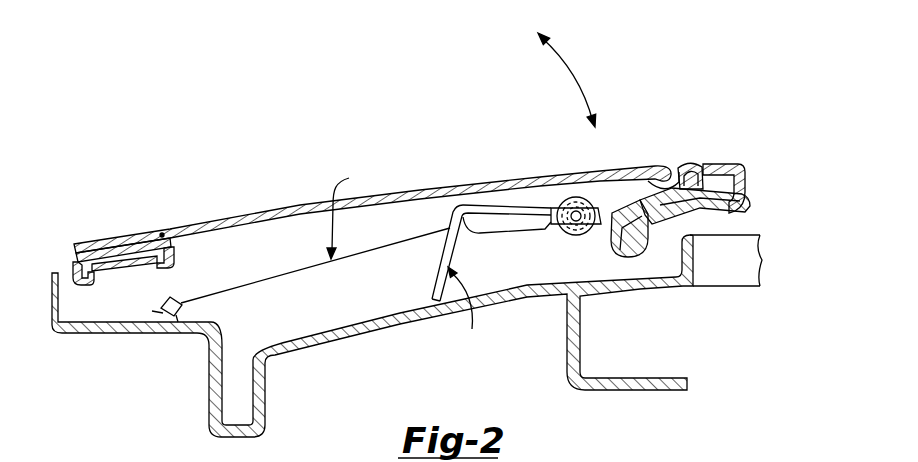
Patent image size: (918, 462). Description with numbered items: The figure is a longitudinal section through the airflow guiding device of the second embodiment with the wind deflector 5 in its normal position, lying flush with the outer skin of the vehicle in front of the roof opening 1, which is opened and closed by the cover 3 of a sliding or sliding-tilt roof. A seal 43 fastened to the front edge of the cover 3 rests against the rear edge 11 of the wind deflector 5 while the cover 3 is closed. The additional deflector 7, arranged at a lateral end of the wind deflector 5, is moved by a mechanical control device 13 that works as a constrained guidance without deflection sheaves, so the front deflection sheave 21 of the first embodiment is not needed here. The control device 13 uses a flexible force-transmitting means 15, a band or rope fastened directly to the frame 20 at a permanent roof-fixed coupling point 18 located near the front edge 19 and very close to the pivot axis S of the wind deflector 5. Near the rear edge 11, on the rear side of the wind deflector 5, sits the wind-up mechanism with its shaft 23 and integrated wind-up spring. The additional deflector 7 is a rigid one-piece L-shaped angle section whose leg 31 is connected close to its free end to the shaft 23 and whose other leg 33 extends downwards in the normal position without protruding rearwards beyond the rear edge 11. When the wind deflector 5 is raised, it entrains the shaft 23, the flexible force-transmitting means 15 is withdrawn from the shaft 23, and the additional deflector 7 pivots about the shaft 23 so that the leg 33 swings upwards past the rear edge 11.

The roof opening 1 is at (742, 237).
The cover 3 is at (703, 163).
The wind deflector 5 is at (405, 193).
The additional deflector 7 is at (462, 307).
The rear edge 11 is at (657, 178).
The control device 13 is at (346, 215).
The flexible force-transmitting means 15 is at (300, 270).
The coupling point 18 is at (178, 316).
The front edge 19 is at (110, 250).
The frame 20 is at (97, 333).
The front deflection sheave 21 is at (571, 240).
The wind-up shaft 23 is at (571, 197).
The leg 31 is at (489, 204).
The leg 33 is at (445, 253).
The seal 43 is at (681, 167).
The pivot axis S is at (162, 231).